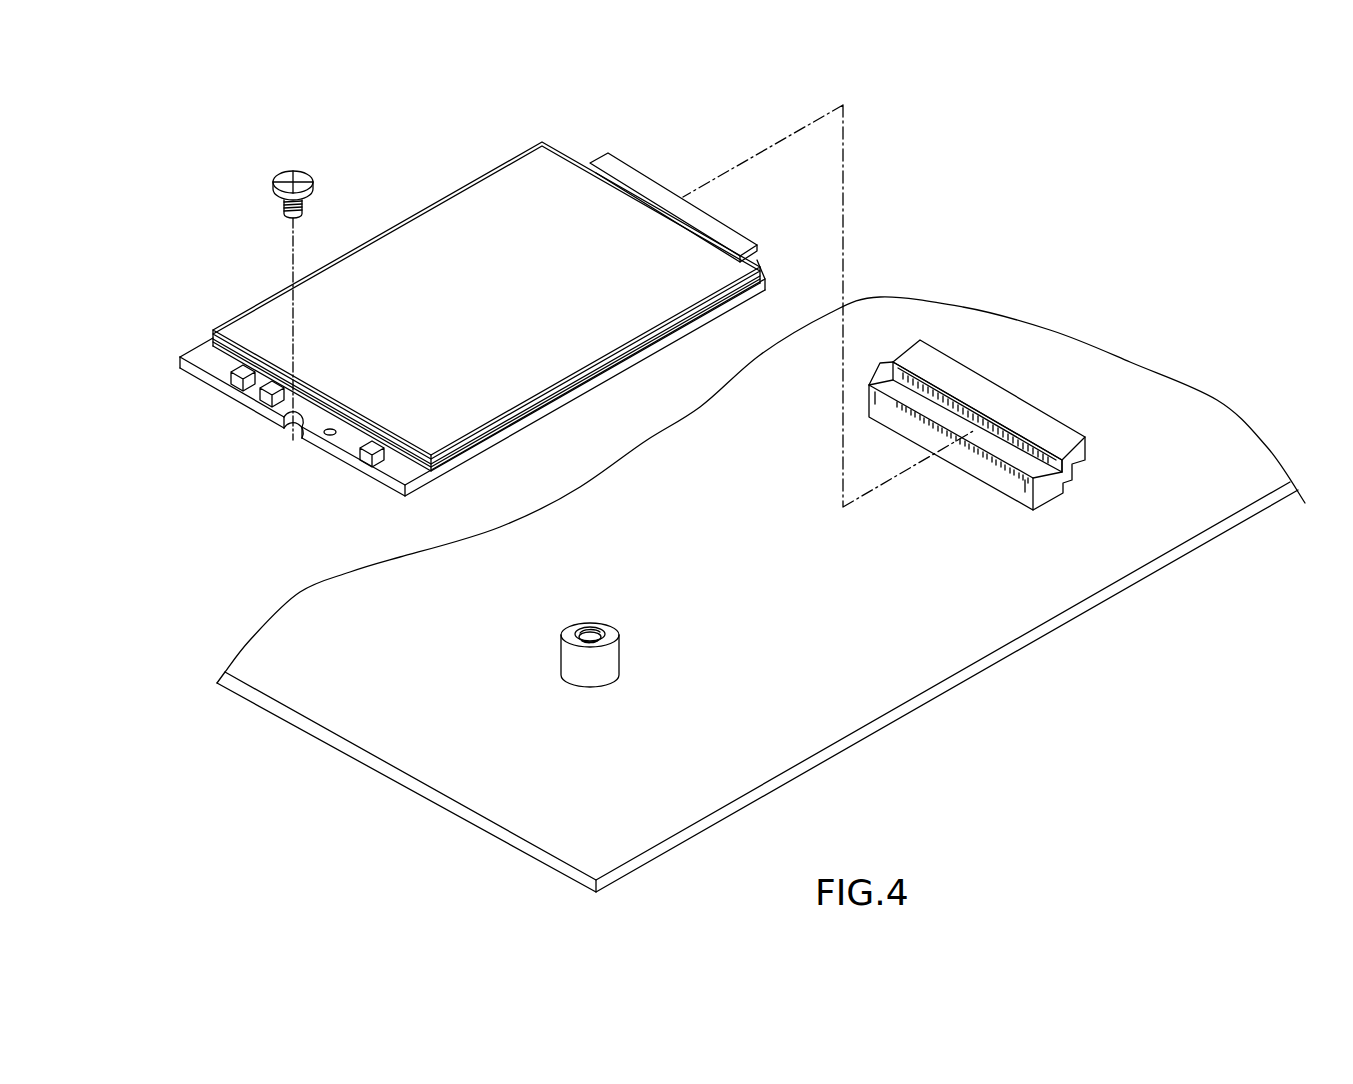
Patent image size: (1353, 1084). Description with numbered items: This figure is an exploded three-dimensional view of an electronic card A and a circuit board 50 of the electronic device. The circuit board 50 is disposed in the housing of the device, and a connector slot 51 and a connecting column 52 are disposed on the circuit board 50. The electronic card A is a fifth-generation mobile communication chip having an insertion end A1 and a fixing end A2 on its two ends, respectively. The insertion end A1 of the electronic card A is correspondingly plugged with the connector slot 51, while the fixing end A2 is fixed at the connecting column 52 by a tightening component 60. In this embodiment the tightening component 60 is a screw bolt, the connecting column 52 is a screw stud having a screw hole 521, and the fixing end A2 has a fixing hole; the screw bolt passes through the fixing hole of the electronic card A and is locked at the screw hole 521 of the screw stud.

The circuit board 50 is at (922, 647).
The connector slot 51 is at (1002, 403).
The connecting column 52 is at (585, 666).
The screw hole 521 is at (580, 627).
The tightening component 60 is at (283, 174).
The electronic card A is at (437, 196).
The insertion end A1 is at (627, 173).
The fixing end A2 is at (203, 357).